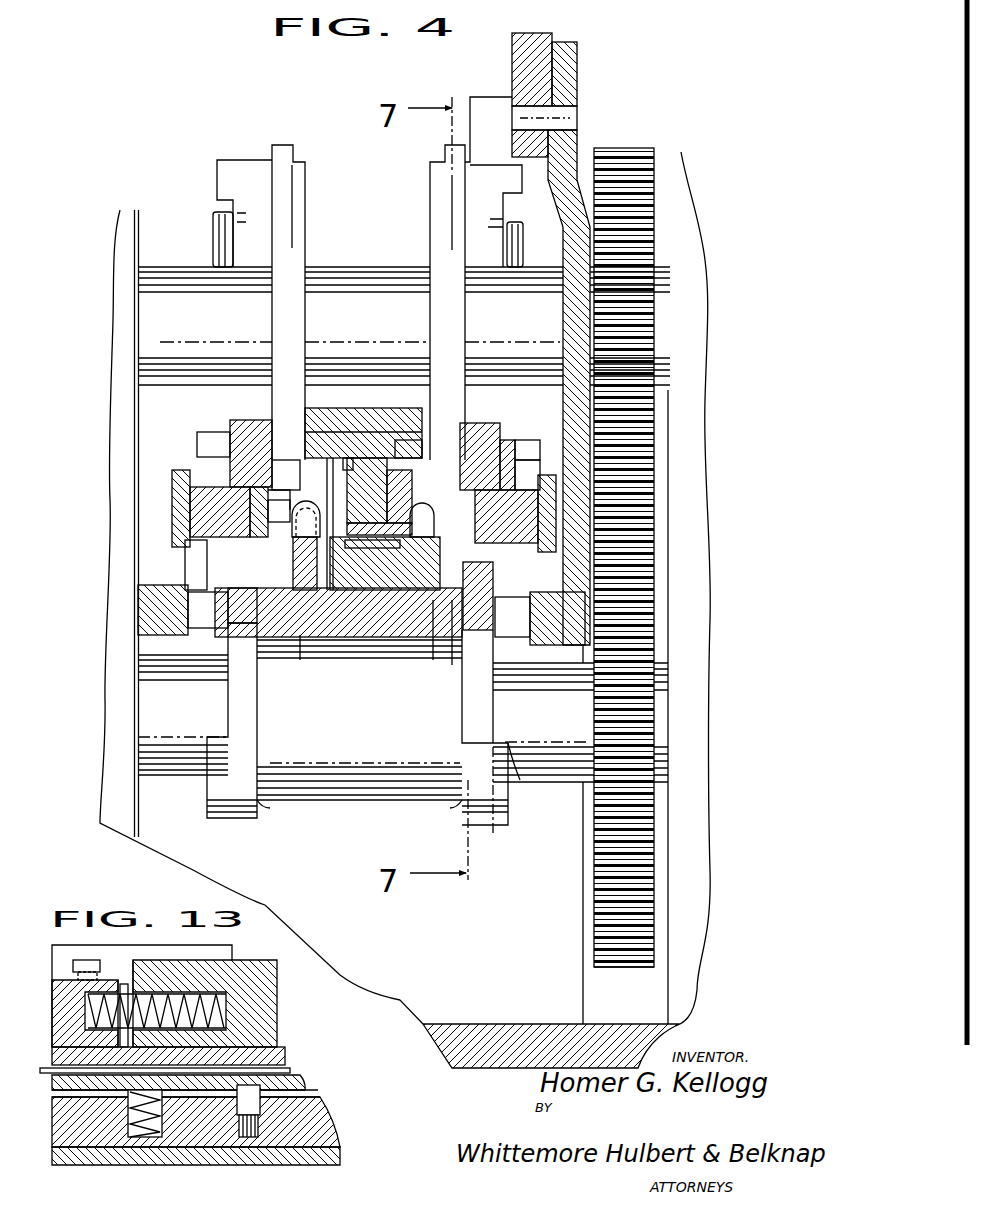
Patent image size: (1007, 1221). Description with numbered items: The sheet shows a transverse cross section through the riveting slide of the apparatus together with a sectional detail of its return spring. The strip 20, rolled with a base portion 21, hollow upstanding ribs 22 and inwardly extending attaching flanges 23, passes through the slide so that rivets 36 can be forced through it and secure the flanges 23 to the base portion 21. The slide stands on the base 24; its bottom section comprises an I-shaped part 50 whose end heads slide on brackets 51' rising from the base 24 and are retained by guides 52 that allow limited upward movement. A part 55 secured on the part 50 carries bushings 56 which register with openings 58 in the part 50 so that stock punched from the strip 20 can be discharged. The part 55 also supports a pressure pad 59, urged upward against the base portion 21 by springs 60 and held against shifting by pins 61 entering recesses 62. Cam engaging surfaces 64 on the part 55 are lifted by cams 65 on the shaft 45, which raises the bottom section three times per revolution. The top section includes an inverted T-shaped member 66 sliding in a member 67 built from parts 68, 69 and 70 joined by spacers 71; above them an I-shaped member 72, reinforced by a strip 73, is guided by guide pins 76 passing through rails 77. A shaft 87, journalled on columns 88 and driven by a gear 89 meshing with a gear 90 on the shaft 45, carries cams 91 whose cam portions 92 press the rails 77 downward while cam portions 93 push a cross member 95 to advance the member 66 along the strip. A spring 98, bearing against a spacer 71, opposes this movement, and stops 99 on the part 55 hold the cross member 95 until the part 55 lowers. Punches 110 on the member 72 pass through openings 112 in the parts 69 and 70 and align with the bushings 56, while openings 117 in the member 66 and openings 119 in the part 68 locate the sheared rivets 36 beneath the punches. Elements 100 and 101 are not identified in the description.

In FIG. 4, the strip 20 is at (420, 640).
In FIG. 4, the base portion 21 is at (433, 634).
In FIG. 4, the hollow upstanding ribs 22 is at (305, 563).
In FIG. 4, the attaching flanges 23 is at (385, 563).
In FIG. 4, the base 24 is at (478, 1024).
In FIG. 4, the rivets 36 is at (306, 522).
In FIG. 4, the shaft 45 is at (525, 775).
In FIG. 4, the I-shaped part 50 is at (338, 612).
In FIG. 4, the brackets 51' is at (155, 812).
In FIG. 4, the guides 52 is at (146, 612).
In FIG. 4, the part 55 is at (447, 643).
In FIG. 4, the bushings 56 is at (271, 605).
In FIG. 4, the openings 58 is at (319, 651).
In FIG. 13, the pressure pad 59 is at (306, 1087).
In FIG. 13, the springs 60 is at (147, 1140).
In FIG. 13, the pins 61 is at (248, 1100).
In FIG. 13, the recesses 62 is at (252, 1137).
In FIG. 4, the cam engaging surfaces 64 is at (214, 550).
In FIG. 4, the cams 65 is at (257, 812).
In FIG. 4, the member 66 is at (380, 420).
In FIG. 13, the member 66 is at (268, 1026).
In FIG. 4, the member 67 is at (422, 520).
In FIG. 13, the member 67 is at (54, 1054).
In FIG. 4, the part 68 is at (306, 519).
In FIG. 13, the part 68 is at (287, 1060).
In FIG. 4, the part 69 is at (335, 460).
In FIG. 4, the part 70 is at (399, 496).
In FIG. 13, the spacers 71 is at (64, 1000).
In FIG. 4, the member 72 is at (350, 458).
In FIG. 4, the reinforcing strip 73 is at (405, 425).
In FIG. 4, the guide pins 76 is at (222, 237).
In FIG. 4, the rails 77 is at (364, 511).
In FIG. 4, the shaft 87 is at (662, 370).
In FIG. 4, the columns 88 is at (704, 553).
In FIG. 4, the gear 89 is at (630, 162).
In FIG. 4, the gear 90 is at (612, 968).
In FIG. 4, the cams 91 is at (306, 258).
In FIG. 4, the cam portions 92 is at (222, 452).
In FIG. 4, the cam portions 93 is at (292, 197).
In FIG. 4, the cross member 95 is at (278, 488).
In FIG. 13, the spring 98 is at (222, 992).
In FIG. 4, the stops 99 is at (279, 511).
In FIG. 4, the block 100 is at (528, 86).
In FIG. 4, the plate 101 is at (569, 96).
In FIG. 4, the punches 110 is at (327, 460).
In FIG. 4, the openings 112 is at (286, 452).
In FIG. 4, the openings 117 is at (367, 490).
In FIG. 4, the openings 119 is at (379, 520).